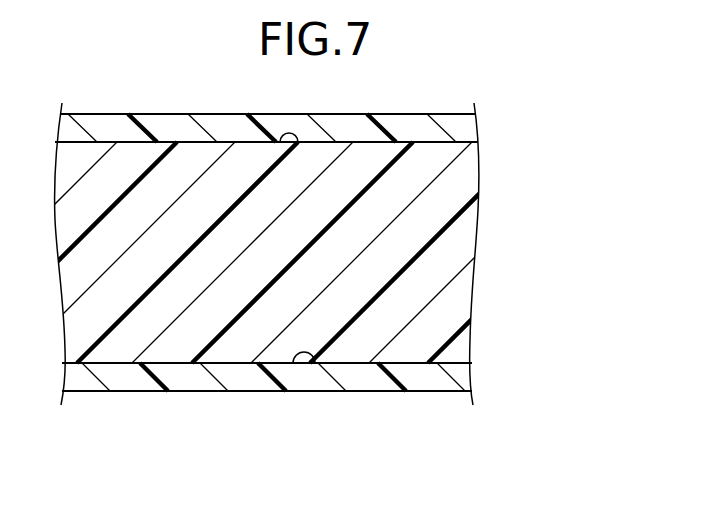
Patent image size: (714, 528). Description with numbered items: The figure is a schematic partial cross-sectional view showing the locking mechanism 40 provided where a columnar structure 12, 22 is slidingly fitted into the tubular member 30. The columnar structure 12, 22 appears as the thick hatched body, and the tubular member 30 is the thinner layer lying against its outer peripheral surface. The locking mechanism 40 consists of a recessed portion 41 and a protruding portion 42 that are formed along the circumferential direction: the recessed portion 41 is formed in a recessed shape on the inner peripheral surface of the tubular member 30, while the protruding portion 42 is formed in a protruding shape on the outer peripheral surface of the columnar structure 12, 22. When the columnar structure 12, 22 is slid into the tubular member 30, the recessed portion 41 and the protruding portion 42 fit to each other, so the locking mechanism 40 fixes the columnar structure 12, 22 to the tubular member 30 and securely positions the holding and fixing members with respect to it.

The columnar structure 12 is at (324, 254).
The columnar structure 22 is at (474, 251).
The tubular member 30 is at (440, 108).
The locking mechanism 40 is at (267, 414).
The recessed portion 41 is at (319, 363).
The protruding portion 42 is at (292, 364).